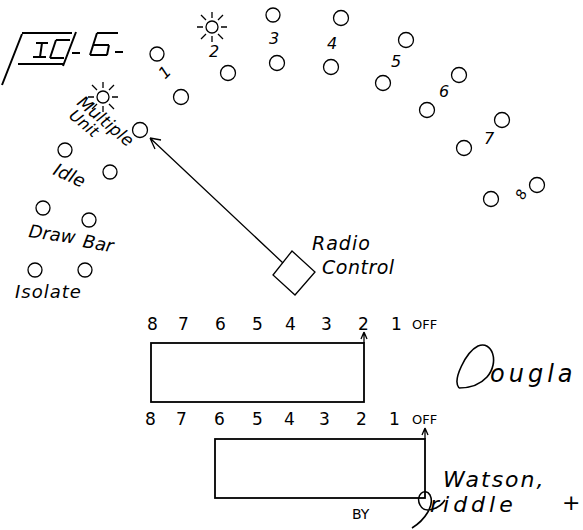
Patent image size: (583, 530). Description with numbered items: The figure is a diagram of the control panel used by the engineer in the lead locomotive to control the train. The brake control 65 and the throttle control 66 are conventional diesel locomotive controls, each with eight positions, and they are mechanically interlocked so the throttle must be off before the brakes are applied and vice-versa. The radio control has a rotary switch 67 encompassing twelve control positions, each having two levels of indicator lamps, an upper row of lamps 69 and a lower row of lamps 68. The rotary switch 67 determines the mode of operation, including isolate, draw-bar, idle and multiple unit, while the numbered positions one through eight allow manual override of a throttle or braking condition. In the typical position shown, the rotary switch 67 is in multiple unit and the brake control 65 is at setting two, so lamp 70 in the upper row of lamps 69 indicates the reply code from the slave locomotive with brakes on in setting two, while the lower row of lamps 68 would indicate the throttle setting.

The brake control 65 is at (151, 375).
The throttle control 66 is at (213, 468).
The rotary switch 67 is at (272, 275).
The lower row of lamps 68 is at (500, 220).
The upper row of lamps 69 is at (547, 207).
The lamp 70 is at (201, 24).